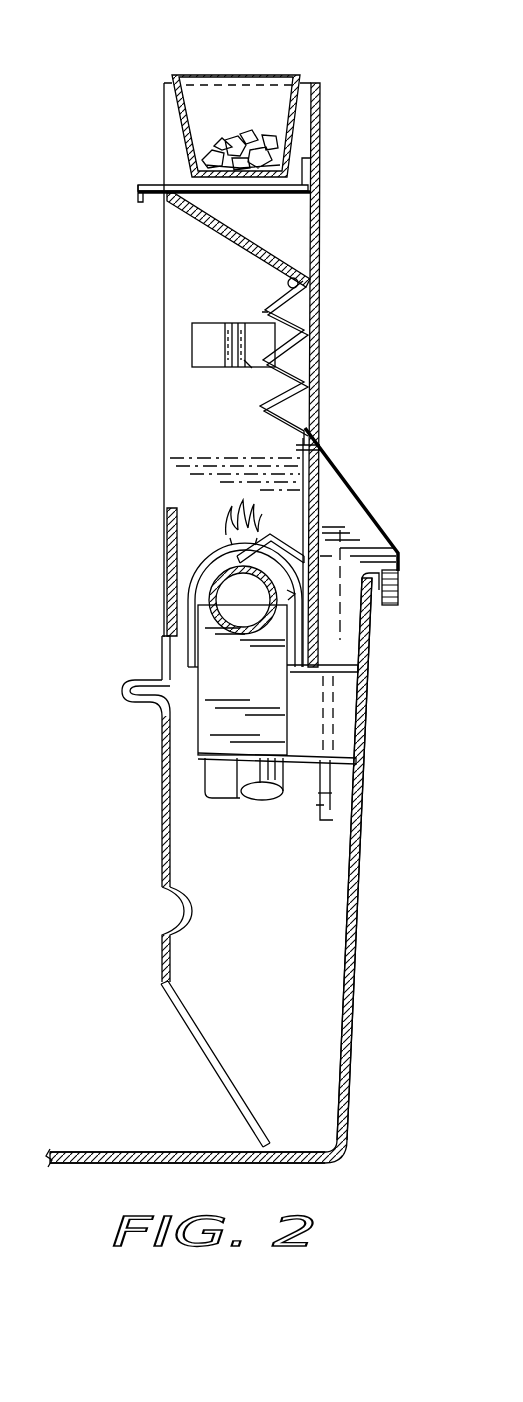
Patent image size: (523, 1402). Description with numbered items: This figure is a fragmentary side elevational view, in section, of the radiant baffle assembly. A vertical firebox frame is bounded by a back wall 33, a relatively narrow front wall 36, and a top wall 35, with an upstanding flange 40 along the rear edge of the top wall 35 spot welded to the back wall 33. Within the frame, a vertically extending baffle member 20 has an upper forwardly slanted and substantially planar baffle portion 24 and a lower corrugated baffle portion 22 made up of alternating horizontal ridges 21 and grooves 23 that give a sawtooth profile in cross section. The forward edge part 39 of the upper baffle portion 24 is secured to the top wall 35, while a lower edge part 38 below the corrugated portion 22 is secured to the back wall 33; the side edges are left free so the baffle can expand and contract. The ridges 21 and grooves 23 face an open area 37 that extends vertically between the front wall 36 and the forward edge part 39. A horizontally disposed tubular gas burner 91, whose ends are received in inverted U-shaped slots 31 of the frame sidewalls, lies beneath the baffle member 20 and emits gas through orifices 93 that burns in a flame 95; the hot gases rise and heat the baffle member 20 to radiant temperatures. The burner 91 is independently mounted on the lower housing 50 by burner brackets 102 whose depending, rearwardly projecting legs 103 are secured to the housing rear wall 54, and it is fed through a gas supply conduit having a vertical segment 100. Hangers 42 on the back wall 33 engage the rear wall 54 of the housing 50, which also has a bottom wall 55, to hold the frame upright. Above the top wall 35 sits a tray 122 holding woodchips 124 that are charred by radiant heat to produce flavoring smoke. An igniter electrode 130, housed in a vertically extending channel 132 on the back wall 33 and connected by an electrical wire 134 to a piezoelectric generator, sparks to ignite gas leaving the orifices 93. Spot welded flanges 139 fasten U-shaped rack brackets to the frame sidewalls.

The baffle member 20 is at (200, 438).
The ridges 21 is at (268, 312).
The lower corrugated baffle portion 22 is at (250, 400).
The grooves 23 is at (300, 286).
The upper baffle portion 24 is at (205, 228).
The inverted U-shaped slots 31 is at (295, 594).
The back wall 33 is at (322, 127).
The top wall 35 is at (138, 190).
The front wall 36 is at (167, 552).
The open area 37 is at (160, 328).
The lower edge part 38 is at (306, 472).
The forward edge part 39 is at (141, 200).
The upstanding flange 40 is at (312, 181).
The hangers 42 is at (335, 466).
The lower housing 50 is at (348, 1058).
The rear wall 54 is at (352, 950).
The bottom wall 55 is at (160, 1152).
The tubular gas burner 91 is at (238, 640).
The gas emitting orifices 93 is at (238, 572).
The flame 95 is at (222, 508).
The vertical segment 100 is at (200, 768).
The burner brackets 102 is at (213, 670).
The legs 103 is at (290, 762).
The tray 122 is at (258, 88).
The woodchips 124 is at (221, 140).
The igniter electrode 130 is at (292, 540).
The vertically extending channel 132 is at (372, 640).
The electrical wire 134 is at (332, 792).
The spot welded flanges 139 is at (255, 330).